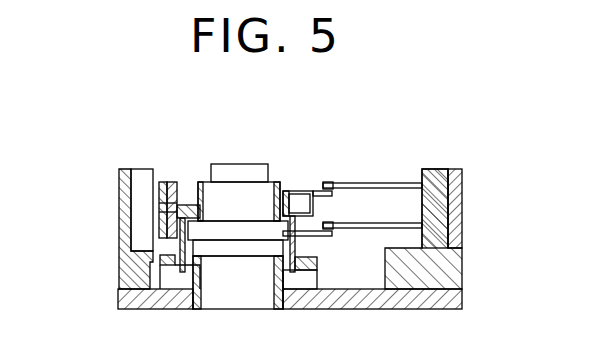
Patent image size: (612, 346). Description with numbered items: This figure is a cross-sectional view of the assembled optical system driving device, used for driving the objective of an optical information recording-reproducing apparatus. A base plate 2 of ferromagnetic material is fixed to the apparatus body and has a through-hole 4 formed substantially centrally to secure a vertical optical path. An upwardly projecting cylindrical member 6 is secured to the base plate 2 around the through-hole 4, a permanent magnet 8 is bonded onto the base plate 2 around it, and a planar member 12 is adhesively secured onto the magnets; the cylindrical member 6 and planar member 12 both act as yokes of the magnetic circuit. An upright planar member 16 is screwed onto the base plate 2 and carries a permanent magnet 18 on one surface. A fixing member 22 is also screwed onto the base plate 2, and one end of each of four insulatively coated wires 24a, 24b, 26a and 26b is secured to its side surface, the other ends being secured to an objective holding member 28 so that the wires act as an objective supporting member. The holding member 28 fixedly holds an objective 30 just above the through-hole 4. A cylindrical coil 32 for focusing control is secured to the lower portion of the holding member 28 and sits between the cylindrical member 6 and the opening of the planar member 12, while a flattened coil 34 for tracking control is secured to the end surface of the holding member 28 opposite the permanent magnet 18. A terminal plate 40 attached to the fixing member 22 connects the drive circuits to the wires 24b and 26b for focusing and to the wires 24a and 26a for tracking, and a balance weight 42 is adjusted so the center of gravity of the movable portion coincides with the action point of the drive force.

The base plate 2 is at (366, 302).
The through-hole 4 is at (247, 289).
The cylindrical member 6 is at (201, 273).
The permanent magnet 8 is at (310, 289).
The planar member 12 is at (162, 267).
The upright planar member 16 is at (119, 183).
The permanent magnet 18 is at (138, 172).
The fixing member 22 is at (444, 171).
The wire 24a is at (363, 182).
The wire 24b is at (318, 190).
The wire 26a is at (397, 222).
The wire 26b is at (317, 237).
The objective holding member 28 is at (178, 180).
The objective 30 is at (243, 163).
The cylindrical coil for focusing control 32 is at (302, 274).
The flattened coil for tracking control 34 is at (165, 181).
The terminal plate 40 is at (462, 183).
The balance weight 42 is at (291, 194).